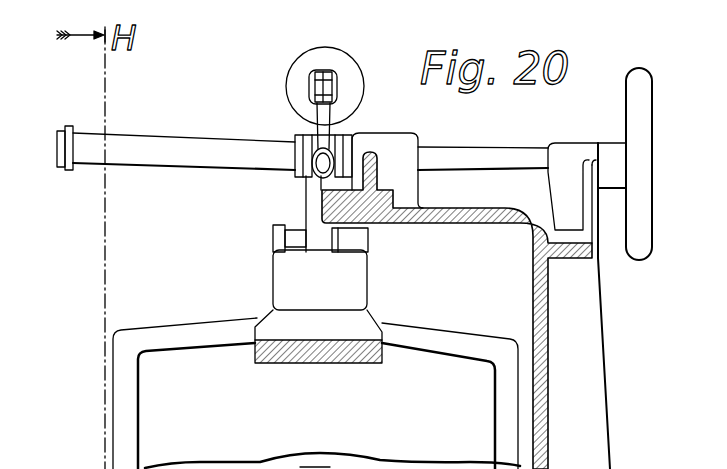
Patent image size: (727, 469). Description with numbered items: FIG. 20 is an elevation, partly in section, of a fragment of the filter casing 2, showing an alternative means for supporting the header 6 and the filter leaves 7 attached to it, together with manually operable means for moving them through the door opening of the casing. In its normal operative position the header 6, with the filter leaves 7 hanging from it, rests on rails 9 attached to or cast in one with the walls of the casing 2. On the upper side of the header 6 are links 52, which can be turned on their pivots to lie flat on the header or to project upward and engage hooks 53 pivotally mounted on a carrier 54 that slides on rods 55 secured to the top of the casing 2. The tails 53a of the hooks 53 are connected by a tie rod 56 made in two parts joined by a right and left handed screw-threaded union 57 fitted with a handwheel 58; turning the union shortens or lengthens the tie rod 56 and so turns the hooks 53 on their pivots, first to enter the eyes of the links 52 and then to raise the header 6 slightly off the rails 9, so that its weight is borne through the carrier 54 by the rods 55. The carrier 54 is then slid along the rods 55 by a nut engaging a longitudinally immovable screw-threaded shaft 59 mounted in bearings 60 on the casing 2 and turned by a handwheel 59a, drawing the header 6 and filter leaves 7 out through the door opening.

The casing 2 is at (455, 224).
The header 6 is at (318, 282).
The filter leaves 7 is at (316, 393).
The rails 9 is at (362, 367).
The links 52 is at (310, 200).
The hooks 53 is at (317, 165).
The tails 53a is at (315, 98).
The carrier 54 is at (297, 138).
The rods 55 is at (175, 155).
The tie rod 56 is at (327, 73).
The screw-threaded union 57 is at (310, 83).
The handwheel 58 is at (353, 90).
The screw-threaded shaft 59 is at (480, 160).
The handwheel 59a is at (633, 118).
The bearings 60 is at (562, 172).